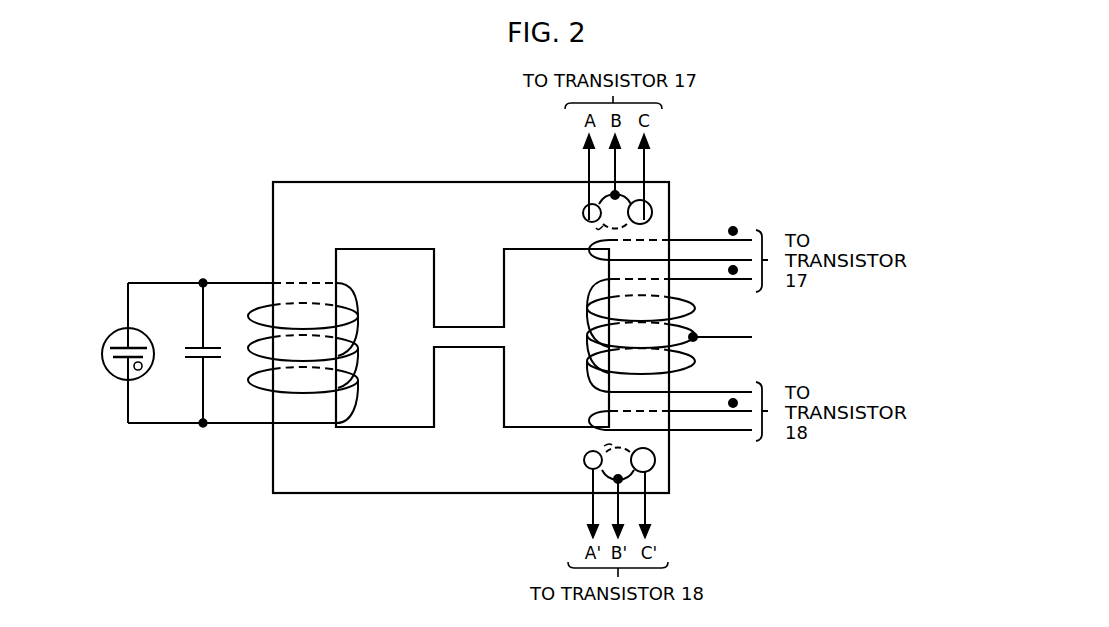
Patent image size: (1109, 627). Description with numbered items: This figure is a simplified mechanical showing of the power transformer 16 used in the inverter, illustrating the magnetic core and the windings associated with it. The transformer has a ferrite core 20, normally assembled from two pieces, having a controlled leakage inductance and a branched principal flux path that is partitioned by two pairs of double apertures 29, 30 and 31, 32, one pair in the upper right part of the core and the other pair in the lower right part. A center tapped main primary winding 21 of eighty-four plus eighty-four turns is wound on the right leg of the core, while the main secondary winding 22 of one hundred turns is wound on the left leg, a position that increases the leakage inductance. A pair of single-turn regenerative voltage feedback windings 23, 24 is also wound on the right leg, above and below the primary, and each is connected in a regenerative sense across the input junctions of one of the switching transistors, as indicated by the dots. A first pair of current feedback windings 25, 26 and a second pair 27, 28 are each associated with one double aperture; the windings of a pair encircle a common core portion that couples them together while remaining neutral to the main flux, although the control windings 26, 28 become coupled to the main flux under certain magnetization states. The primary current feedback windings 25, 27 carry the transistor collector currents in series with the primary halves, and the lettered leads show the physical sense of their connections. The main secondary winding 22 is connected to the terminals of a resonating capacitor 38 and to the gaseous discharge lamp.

The power transformer 16 is at (756, 545).
The ferrite core 20 is at (351, 494).
The center tapped main primary winding 21 is at (591, 323).
The main secondary winding 22 is at (366, 331).
The regenerative voltage feedback winding 23 is at (598, 264).
The regenerative voltage feedback winding 24 is at (599, 414).
The primary current feedback winding 25 is at (655, 224).
The secondary current feedback winding 26 is at (603, 226).
The primary current feedback winding 27 is at (654, 456).
The secondary current feedback winding 28 is at (604, 446).
The double aperture 29 is at (585, 210).
The double aperture 30 is at (654, 204).
The double aperture 31 is at (588, 465).
The double aperture 32 is at (658, 470).
The resonating capacitor 38 is at (208, 349).